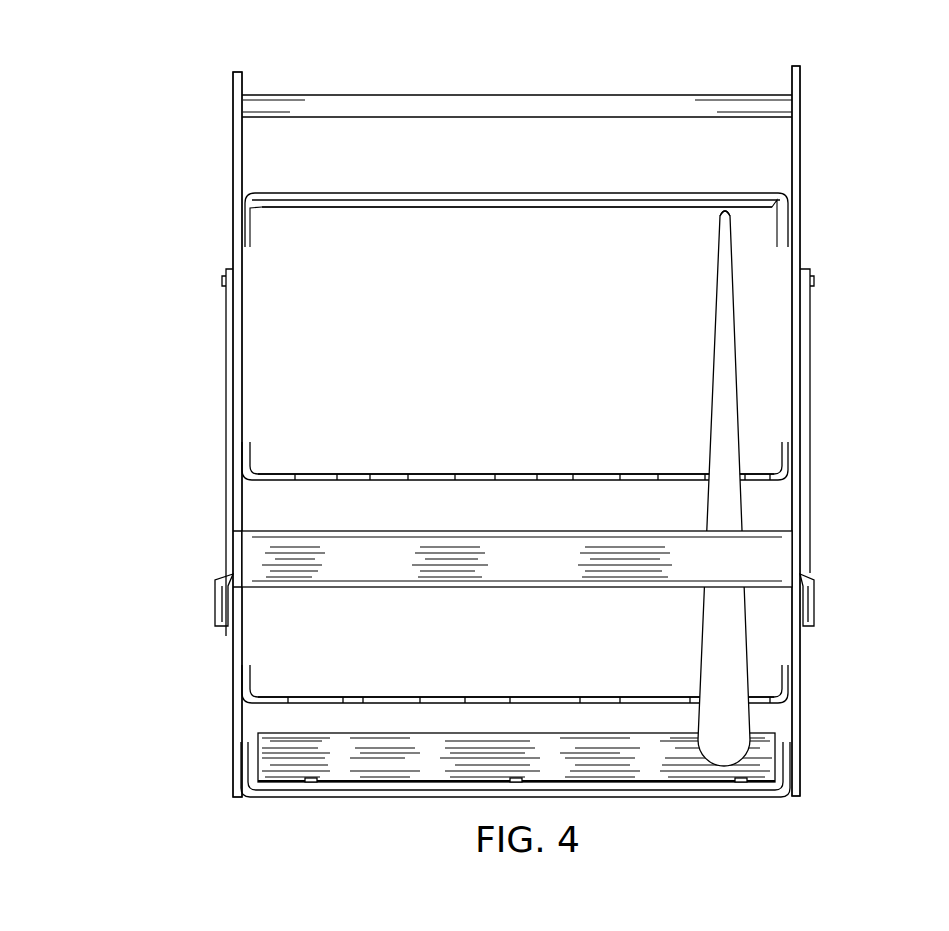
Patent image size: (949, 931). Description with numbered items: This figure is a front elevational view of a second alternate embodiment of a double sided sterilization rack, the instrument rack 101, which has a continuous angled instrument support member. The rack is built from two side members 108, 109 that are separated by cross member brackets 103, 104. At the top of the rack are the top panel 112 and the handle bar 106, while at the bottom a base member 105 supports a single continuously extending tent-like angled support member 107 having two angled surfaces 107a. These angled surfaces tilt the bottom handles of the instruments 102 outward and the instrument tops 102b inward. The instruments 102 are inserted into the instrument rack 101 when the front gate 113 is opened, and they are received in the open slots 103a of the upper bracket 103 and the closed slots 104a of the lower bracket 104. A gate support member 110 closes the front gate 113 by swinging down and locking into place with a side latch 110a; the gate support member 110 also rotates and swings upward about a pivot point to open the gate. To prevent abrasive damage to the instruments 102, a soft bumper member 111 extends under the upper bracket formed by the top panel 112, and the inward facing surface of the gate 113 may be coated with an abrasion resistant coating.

The instrument rack 101 is at (826, 262).
The instruments 102 is at (735, 436).
The instrument tops 102b is at (720, 232).
The cross member bracket 103 is at (789, 476).
The open slots 103a is at (313, 470).
The cross member bracket 104 is at (792, 698).
The closed slots 104a is at (325, 695).
The base member 105 is at (735, 795).
The handle bar 106 is at (668, 95).
The angled support member 107 is at (762, 754).
The angled surfaces 107a is at (305, 752).
The side member 108 is at (233, 246).
The side member 109 is at (801, 346).
The gate support member 110 is at (226, 358).
The side latch 110a is at (216, 596).
The soft bumper member 111 is at (462, 204).
The top panel 112 is at (756, 193).
The front gate 113 is at (775, 558).